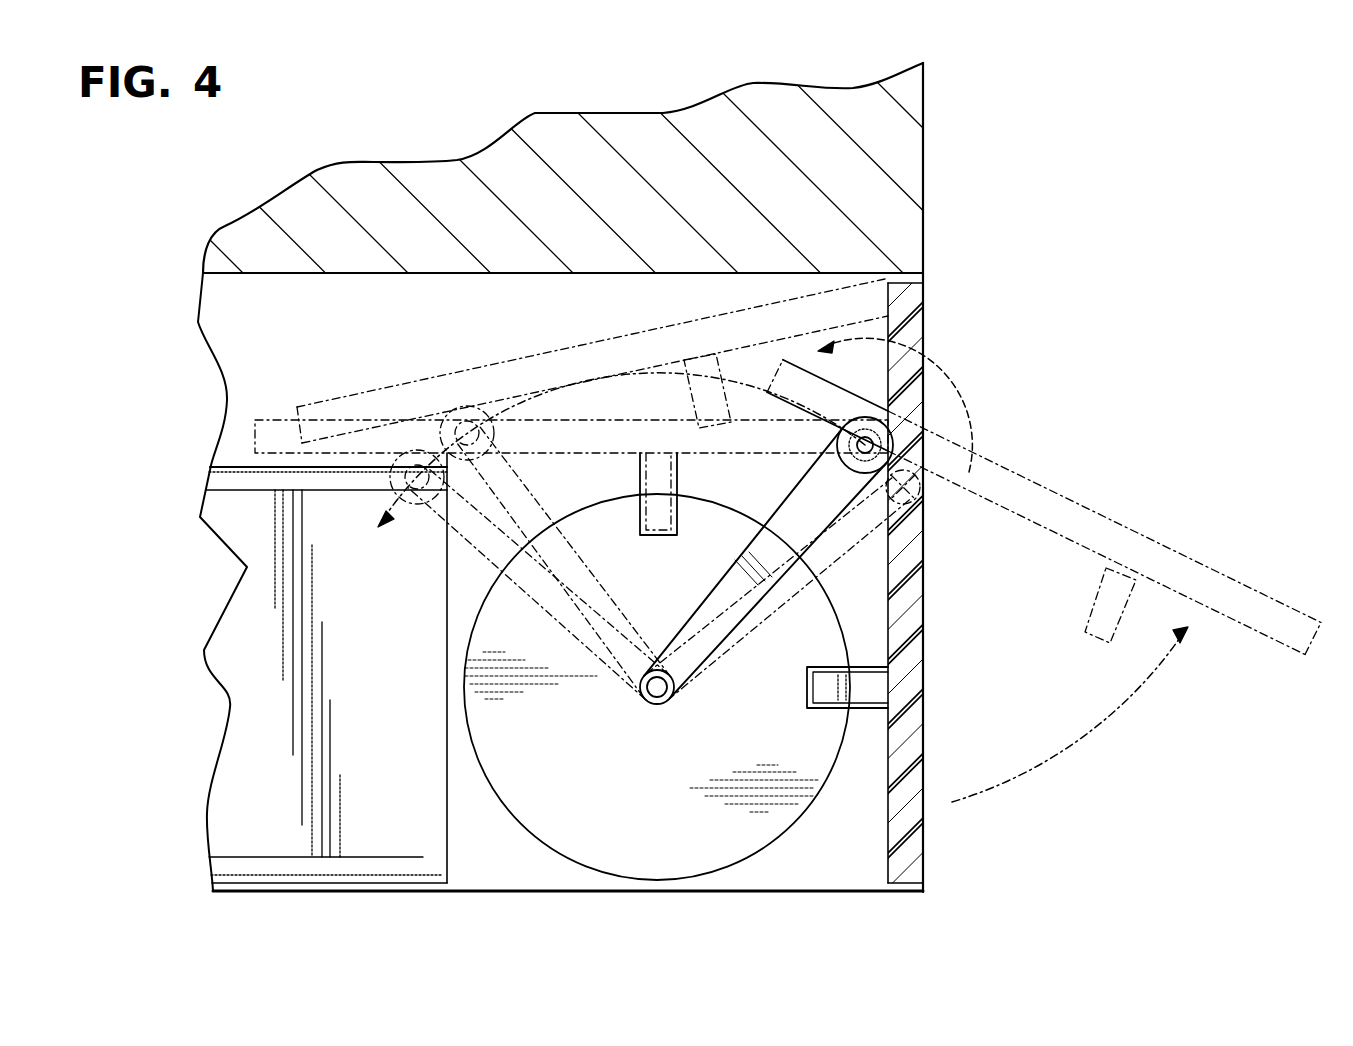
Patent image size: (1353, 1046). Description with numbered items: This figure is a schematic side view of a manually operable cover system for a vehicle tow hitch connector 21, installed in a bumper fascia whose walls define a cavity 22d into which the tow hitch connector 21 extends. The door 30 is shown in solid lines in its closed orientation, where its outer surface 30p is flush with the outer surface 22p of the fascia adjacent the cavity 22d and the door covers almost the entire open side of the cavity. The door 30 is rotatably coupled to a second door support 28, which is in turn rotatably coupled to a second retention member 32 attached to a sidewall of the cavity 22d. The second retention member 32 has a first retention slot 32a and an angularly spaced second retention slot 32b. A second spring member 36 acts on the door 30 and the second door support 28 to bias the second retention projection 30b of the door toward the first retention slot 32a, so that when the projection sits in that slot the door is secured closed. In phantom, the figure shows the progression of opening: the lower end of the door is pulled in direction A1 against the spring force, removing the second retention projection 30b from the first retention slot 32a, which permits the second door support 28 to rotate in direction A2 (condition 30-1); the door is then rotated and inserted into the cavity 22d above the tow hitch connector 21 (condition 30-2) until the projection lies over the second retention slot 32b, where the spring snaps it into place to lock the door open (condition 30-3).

The vehicle tow hitch connector 21 is at (363, 835).
The cavity 22d is at (850, 853).
The outer surface of the fascia 22p is at (923, 178).
The second door support 28 is at (692, 652).
The door 30 is at (1203, 555).
The door condition 30-1 is at (1103, 503).
The door condition 30-2 is at (635, 345).
The door condition 30-3 is at (265, 415).
The second retention projection 30b is at (1116, 591).
The outer surface of the door 30p is at (925, 558).
The second retention member 32 is at (582, 823).
The first retention slot 32a is at (826, 710).
The second retention slot 32b is at (640, 518).
The second spring member 36 is at (957, 392).
The direction A1 is at (1097, 727).
The direction A2 is at (562, 380).